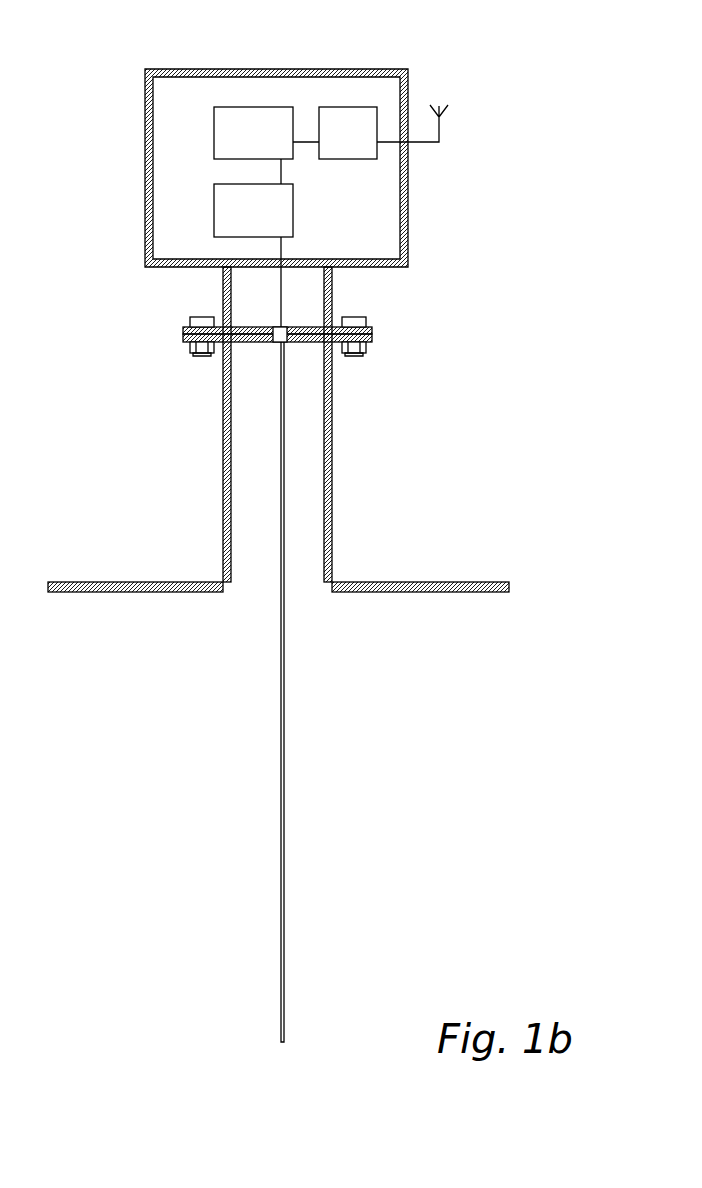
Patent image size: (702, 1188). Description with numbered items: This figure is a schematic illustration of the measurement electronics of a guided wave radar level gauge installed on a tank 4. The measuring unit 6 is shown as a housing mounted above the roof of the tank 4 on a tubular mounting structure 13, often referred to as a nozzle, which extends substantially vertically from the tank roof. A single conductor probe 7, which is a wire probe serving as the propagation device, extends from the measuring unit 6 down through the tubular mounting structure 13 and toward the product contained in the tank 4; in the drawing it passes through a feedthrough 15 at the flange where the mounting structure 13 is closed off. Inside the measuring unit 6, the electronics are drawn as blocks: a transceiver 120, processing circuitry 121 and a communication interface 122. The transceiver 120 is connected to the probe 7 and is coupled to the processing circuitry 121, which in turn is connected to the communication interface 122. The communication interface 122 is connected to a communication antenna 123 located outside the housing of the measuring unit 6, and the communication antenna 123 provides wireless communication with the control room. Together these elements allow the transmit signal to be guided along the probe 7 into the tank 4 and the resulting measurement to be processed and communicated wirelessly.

The tank 4 is at (440, 582).
The measuring unit 6 is at (200, 69).
The single conductor probe 7 is at (284, 828).
The tubular mounting structure 13 is at (332, 533).
The feedthrough 15 is at (281, 327).
The transceiver 120 is at (293, 210).
The processing circuitry 121 is at (214, 134).
The communication interface 122 is at (350, 107).
The communication antenna 123 is at (439, 130).